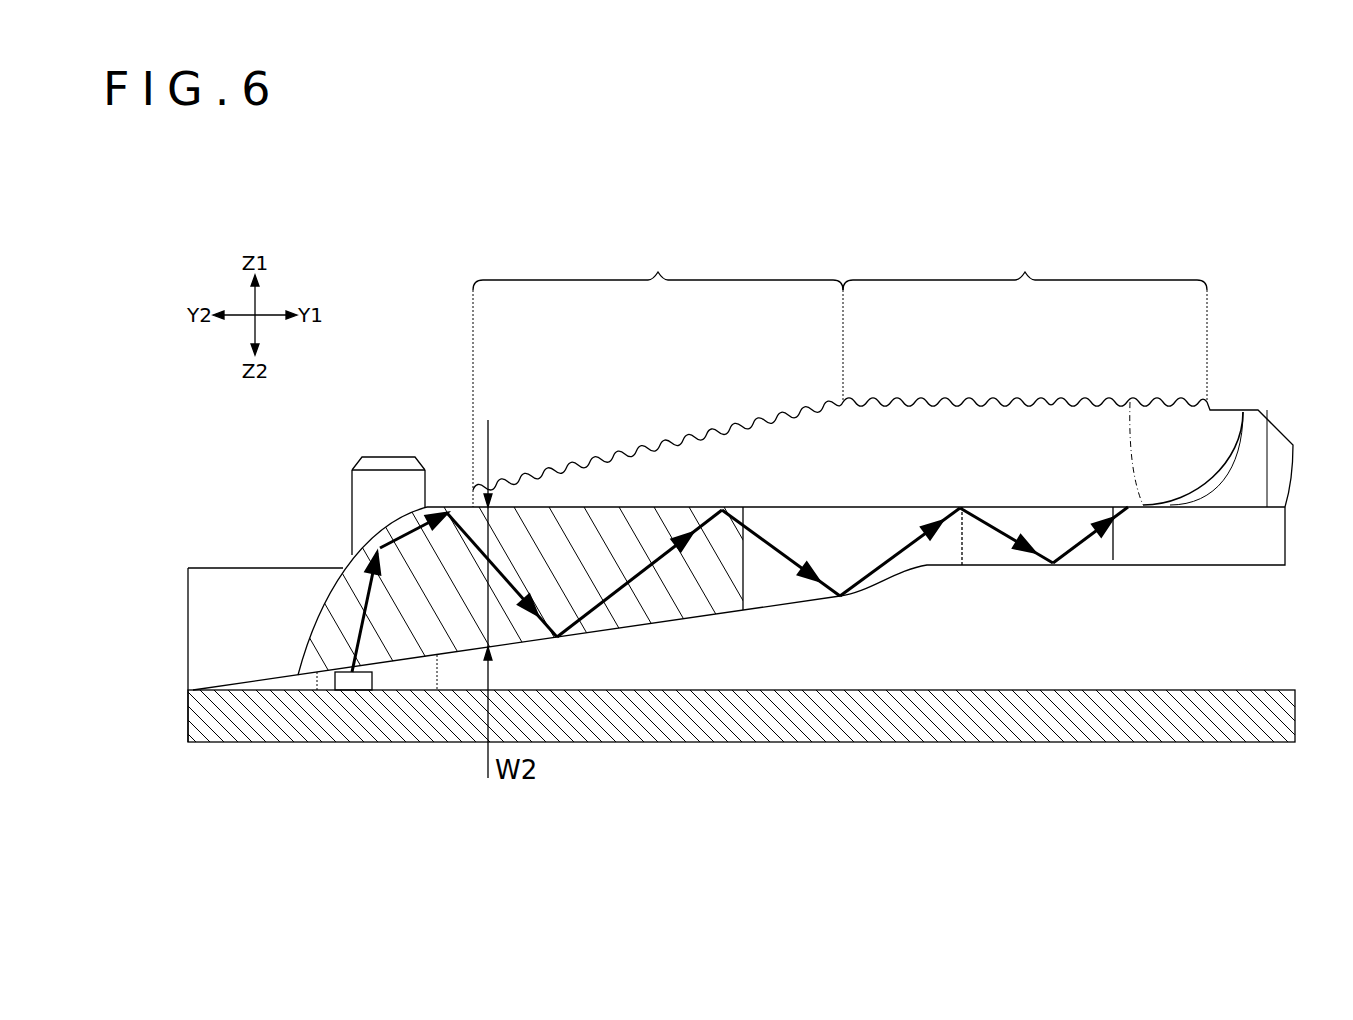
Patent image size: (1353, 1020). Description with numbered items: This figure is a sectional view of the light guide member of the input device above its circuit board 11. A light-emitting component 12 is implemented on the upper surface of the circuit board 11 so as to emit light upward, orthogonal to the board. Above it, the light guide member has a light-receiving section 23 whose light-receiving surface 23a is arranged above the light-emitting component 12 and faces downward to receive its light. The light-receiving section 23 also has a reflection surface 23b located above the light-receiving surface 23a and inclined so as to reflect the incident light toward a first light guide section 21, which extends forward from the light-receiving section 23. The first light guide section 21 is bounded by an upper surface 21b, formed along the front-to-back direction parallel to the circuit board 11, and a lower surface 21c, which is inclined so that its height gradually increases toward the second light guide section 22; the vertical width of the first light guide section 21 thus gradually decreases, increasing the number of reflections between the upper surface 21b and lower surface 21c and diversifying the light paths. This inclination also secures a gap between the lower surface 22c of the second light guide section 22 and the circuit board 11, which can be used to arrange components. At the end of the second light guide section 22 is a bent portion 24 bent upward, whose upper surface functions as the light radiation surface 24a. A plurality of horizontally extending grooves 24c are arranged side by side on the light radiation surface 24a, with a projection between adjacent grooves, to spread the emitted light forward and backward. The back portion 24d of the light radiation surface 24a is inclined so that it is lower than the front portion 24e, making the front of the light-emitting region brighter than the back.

The circuit board 11 is at (775, 745).
The light-emitting component 12 is at (352, 688).
The first light guide section 21 is at (562, 528).
The upper surface 21b is at (665, 506).
The lower surface 21c is at (630, 630).
The second light guide section 22 is at (921, 526).
The lower surface of the second light guide section 22c is at (963, 570).
The light-receiving section 23 is at (345, 577).
The light-receiving surface 23a is at (317, 690).
The reflection surface 23b is at (312, 614).
The bent portion 24 is at (1093, 492).
The light radiation surface 24a is at (979, 396).
The grooves 24c is at (1091, 406).
The back portion 24d is at (658, 375).
The front portion 24e is at (1025, 325).